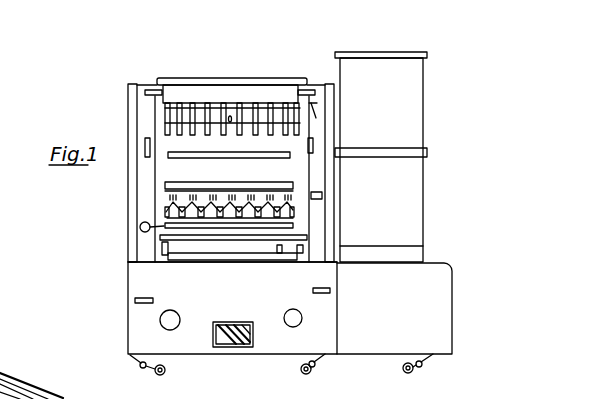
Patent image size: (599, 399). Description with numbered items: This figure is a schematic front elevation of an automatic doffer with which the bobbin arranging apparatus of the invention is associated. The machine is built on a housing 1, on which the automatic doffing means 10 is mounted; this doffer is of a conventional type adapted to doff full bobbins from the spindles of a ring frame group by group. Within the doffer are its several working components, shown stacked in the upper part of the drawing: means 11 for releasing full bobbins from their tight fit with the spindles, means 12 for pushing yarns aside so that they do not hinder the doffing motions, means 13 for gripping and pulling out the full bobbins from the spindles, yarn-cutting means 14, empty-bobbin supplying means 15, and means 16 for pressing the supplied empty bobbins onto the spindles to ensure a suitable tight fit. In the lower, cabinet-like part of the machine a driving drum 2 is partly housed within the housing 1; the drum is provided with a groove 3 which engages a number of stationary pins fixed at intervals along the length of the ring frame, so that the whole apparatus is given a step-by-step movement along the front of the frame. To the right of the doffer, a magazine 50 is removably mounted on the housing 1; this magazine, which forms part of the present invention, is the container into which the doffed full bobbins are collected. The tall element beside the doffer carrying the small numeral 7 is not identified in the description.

The housing 1 is at (277, 342).
The driving drum 2 is at (243, 340).
The groove 3 is at (233, 343).
The collecting container 7 is at (425, 98).
The automatic doffing means 10 is at (134, 77).
The means for releasing full bobbins 11 is at (157, 263).
The means for pushing yarns aside 12 is at (167, 187).
The means for gripping and pulling out full bobbins 13 is at (165, 210).
The yarn-cutting means 14 is at (168, 223).
The empty-bobbin supplying means 15 is at (175, 116).
The means for pressing empty bobbins onto spindles 16 is at (170, 157).
The magazine 50 is at (421, 51).